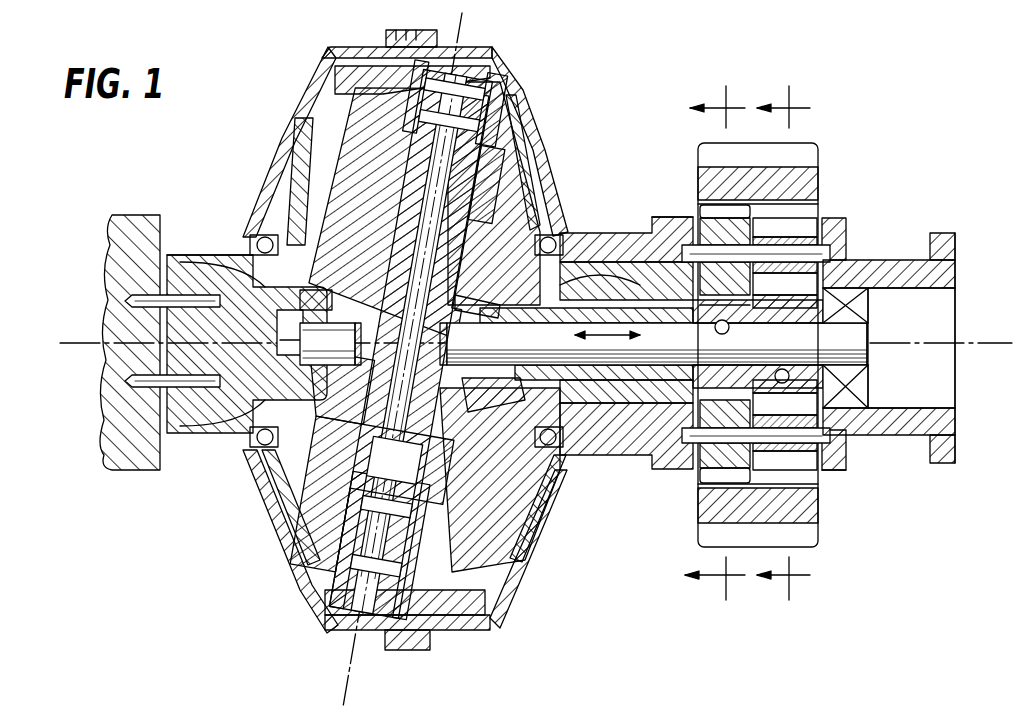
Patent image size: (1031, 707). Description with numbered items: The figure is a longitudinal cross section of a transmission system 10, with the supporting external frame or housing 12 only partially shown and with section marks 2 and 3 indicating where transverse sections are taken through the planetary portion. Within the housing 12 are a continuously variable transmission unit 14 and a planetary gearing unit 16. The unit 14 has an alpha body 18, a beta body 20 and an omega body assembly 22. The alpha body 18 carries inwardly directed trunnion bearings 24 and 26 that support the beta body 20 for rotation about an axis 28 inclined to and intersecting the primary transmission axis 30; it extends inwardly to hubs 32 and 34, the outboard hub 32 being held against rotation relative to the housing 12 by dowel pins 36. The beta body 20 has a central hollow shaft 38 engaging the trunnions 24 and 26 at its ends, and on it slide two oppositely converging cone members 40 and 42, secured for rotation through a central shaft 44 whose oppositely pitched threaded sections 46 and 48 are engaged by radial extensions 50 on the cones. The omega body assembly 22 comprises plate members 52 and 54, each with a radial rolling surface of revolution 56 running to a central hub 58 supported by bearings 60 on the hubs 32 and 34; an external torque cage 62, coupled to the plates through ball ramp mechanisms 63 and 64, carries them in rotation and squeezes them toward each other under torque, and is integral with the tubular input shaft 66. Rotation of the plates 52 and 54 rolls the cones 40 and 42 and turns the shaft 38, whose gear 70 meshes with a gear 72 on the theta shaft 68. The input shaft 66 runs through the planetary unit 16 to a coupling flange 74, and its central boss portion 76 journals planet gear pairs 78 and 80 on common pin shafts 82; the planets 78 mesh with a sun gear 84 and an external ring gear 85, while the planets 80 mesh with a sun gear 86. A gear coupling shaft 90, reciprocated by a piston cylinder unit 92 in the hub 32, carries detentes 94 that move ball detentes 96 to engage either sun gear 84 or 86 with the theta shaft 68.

The transmission system 10 is at (628, 92).
The housing 12 is at (132, 218).
The continuously variable transmission unit 14 is at (407, 329).
The planetary gearing unit 16 is at (772, 317).
The alpha body 18 is at (336, 72).
The beta body 20 is at (365, 152).
The omega body assembly 22 is at (528, 94).
The trunnion bearing 24 is at (483, 70).
The trunnion bearing 26 is at (326, 623).
The axis 28 is at (347, 673).
The primary transmission axis 30 is at (976, 344).
The outboard hub 32 is at (240, 255).
The hub 34 is at (628, 398).
The dowel pins 36 is at (128, 298).
The central hollow shaft 38 is at (412, 418).
The cone member 40 is at (368, 170).
The cone member 42 is at (428, 497).
The central shaft 44 is at (370, 407).
The threaded section 46 is at (418, 198).
The threaded section 48 is at (374, 452).
The radial extensions 50 is at (500, 174).
The plate member 52 is at (290, 150).
The plate member 54 is at (522, 146).
The rolling surface of revolution 56 is at (294, 180).
The central hub 58 is at (588, 238).
The bearings 60 is at (200, 255).
The torque cage 62 is at (479, 48).
The ball ramp mechanism 63 is at (254, 203).
The ball ramp mechanism 64 is at (551, 234).
The tubular input shaft 66 is at (616, 232).
The theta shaft 68 is at (637, 323).
The gear 70 is at (376, 297).
The gear 72 is at (480, 397).
The coupling flange 74 is at (954, 450).
The central boss portion 76 is at (846, 468).
The planet gears 78 is at (694, 232).
The planet gears 80 is at (796, 236).
The pin shafts 82 is at (831, 254).
The sun gear 84 is at (751, 310).
The ring gear 85 is at (800, 176).
The sun gear 86 is at (800, 318).
The gear coupling shaft 90 is at (873, 346).
The piston cylinder unit 92 is at (290, 332).
The detentes 94 is at (769, 368).
The ball detentes 96 is at (730, 326).
The section line 2 is at (715, 341).
The section line 3 is at (783, 341).